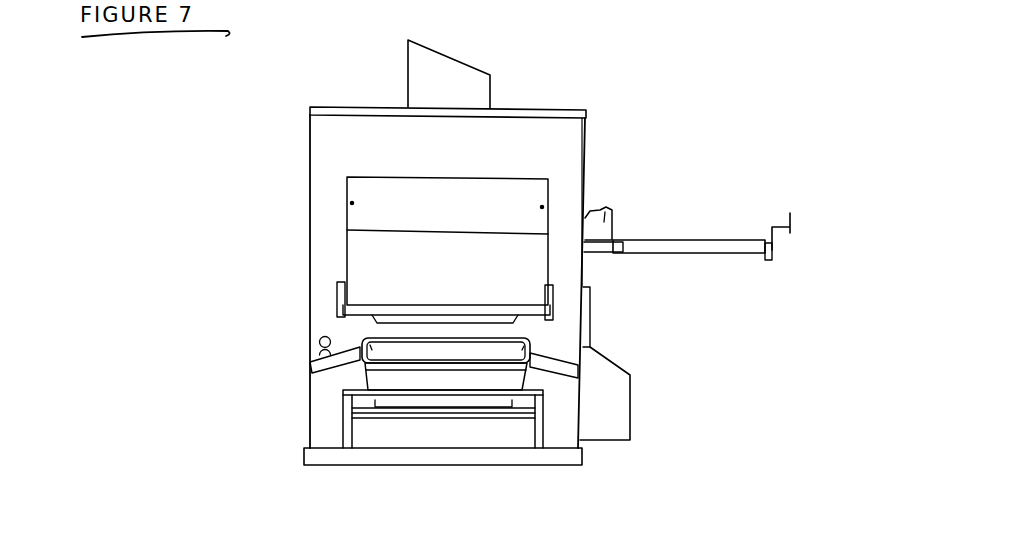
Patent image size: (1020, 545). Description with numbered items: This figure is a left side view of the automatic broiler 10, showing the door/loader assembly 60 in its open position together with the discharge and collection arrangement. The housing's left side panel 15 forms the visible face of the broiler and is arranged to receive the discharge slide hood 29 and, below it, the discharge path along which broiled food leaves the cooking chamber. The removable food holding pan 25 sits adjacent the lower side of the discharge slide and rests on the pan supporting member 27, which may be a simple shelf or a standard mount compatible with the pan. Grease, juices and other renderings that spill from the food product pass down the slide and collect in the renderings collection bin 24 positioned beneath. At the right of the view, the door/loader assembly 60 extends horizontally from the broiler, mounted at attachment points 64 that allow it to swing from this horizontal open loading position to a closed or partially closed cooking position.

The automatic broiler 10 is at (625, 99).
The left side panel 15 is at (330, 143).
The renderings collection bin 24 is at (498, 440).
The food holding pan 25 is at (357, 342).
The pan supporting member 27 is at (363, 390).
The discharge slide hood 29 is at (358, 268).
The door/loader assembly 60 is at (717, 233).
The attachment points 64 is at (610, 208).